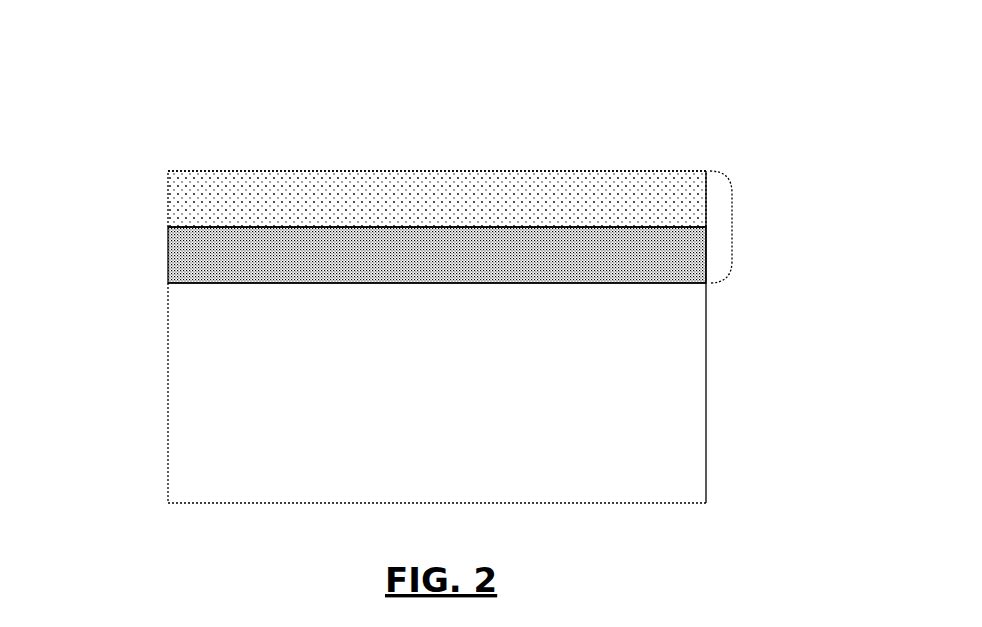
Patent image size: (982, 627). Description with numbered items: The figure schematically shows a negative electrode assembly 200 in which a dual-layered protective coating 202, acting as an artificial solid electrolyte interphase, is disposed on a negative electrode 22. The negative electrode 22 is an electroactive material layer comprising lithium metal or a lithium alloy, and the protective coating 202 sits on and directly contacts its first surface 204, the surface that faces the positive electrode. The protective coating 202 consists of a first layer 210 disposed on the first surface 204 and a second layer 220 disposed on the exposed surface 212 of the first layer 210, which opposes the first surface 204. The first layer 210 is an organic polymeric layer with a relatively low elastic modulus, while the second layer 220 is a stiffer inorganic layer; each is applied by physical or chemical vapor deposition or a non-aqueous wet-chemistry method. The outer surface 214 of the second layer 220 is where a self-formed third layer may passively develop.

The negative electrode assembly 200 is at (636, 91).
The negative electrode 22 is at (705, 393).
The first surface 204 is at (228, 283).
The first layer 210 is at (168, 257).
The second layer 220 is at (168, 200).
The exposed surface 212 is at (437, 227).
The surface 214 is at (537, 171).
The protective coating 202 is at (732, 227).